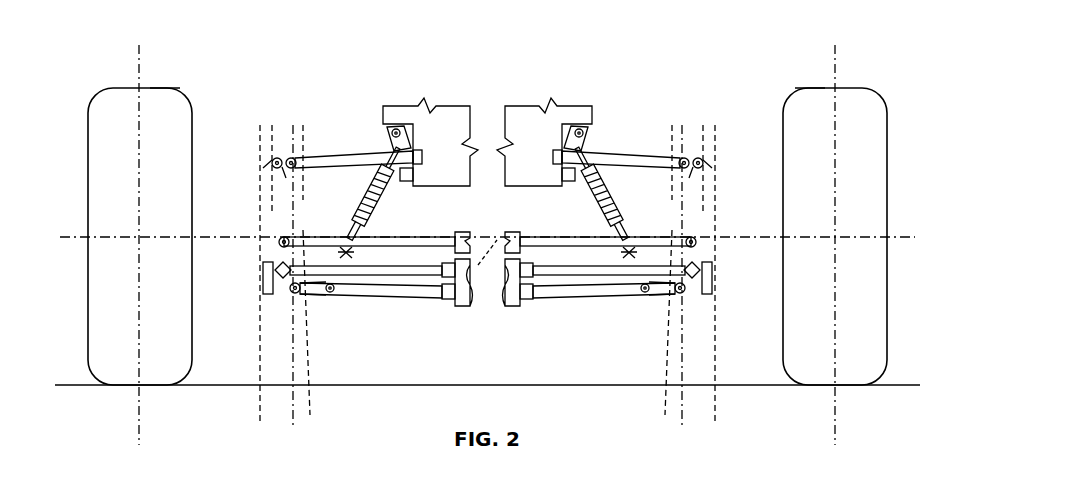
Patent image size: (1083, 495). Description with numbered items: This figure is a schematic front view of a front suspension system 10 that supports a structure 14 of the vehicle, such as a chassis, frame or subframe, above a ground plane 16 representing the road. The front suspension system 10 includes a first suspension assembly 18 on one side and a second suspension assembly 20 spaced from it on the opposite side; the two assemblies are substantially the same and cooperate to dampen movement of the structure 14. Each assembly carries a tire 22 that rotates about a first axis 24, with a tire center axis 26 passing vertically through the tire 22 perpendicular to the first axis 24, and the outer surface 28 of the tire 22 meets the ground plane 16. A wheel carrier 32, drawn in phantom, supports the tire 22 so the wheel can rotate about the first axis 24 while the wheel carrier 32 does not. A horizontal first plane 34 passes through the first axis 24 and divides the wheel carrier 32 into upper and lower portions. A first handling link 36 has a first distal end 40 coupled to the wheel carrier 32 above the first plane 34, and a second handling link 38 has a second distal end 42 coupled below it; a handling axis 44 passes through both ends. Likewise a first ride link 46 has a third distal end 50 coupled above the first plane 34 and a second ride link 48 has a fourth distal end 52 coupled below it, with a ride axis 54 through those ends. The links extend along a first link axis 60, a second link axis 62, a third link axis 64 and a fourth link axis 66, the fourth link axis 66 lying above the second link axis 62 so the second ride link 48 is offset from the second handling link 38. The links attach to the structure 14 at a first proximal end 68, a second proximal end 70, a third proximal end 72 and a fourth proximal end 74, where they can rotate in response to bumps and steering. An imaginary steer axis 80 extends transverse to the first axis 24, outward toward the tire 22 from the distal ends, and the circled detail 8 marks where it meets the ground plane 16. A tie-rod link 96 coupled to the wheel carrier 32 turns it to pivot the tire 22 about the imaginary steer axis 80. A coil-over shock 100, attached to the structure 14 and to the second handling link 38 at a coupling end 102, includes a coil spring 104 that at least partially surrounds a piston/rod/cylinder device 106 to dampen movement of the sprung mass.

The contact patch center 8 is at (728, 380).
The front suspension system 10 is at (292, 54).
The structure 14 is at (450, 105).
The ground plane 16 is at (92, 390).
The first suspension assembly 18 is at (737, 88).
The second suspension assembly 20 is at (283, 107).
The tire 22 is at (107, 272).
The first axis 24 is at (250, 236).
The tire center axis 26 is at (137, 80).
The outer surface 28 is at (163, 86).
The wheel carrier 32 is at (262, 290).
The first plane 34 is at (88, 235).
The first handling link 36 is at (330, 160).
The second handling link 38 is at (362, 297).
The first distal end 40 is at (275, 158).
The second distal end 42 is at (290, 310).
The handling axis 44 is at (318, 395).
The first ride link 46 is at (396, 128).
The second ride link 48 is at (378, 277).
The third distal end 50 is at (293, 157).
The fourth distal end 52 is at (280, 243).
The ride axis 54 is at (292, 428).
The first link axis 60 is at (262, 162).
The second link axis 62 is at (262, 318).
The third link axis 64 is at (264, 186).
The fourth link axis 66 is at (273, 270).
The first proximal end 68 is at (420, 178).
The second proximal end 70 is at (460, 307).
The third proximal end 72 is at (405, 148).
The fourth proximal end 74 is at (472, 256).
The imaginary steer axis 80 is at (246, 400).
The tie-rod link 96 is at (400, 299).
The coil-over shock 100 is at (398, 105).
The coupling end 102 is at (330, 294).
The coil spring 104 is at (358, 206).
The piston/rod/cylinder device 106 is at (398, 182).